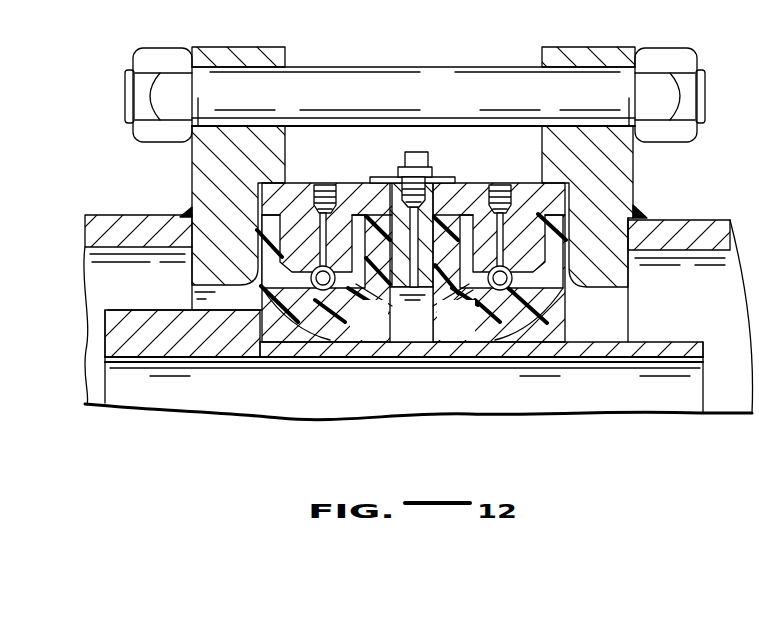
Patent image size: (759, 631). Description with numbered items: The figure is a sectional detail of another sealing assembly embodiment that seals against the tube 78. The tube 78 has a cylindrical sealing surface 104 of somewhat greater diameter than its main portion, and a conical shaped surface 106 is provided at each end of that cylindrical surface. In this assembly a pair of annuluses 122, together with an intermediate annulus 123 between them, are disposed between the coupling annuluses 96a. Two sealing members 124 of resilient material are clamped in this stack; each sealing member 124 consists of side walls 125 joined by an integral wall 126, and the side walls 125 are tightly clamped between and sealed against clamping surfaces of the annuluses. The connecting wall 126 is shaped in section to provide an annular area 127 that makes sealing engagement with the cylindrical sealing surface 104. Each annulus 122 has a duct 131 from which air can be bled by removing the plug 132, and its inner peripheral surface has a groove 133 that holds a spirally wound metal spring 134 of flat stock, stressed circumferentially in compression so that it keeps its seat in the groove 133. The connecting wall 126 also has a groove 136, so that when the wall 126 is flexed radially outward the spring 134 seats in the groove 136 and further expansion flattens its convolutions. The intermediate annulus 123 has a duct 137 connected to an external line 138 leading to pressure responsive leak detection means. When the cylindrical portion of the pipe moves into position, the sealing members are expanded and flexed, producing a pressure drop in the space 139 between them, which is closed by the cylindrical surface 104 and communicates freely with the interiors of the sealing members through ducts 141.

The tube 78 is at (648, 348).
The coupling annuluses 96a is at (212, 160).
The cylindrical sealing surface 104 is at (148, 322).
The conical shaped surface 106 is at (230, 309).
The annulus 122 is at (355, 197).
The intermediate annulus 123 is at (445, 172).
The sealing member 124 is at (282, 345).
The side wall 125 is at (268, 230).
The integral wall 126 is at (282, 322).
The annular area 127 is at (320, 337).
The duct 131 is at (316, 216).
The plug 132 is at (325, 187).
The groove 133 is at (319, 244).
The spirally wound metal spring 134 is at (280, 330).
The groove 136 is at (327, 300).
The duct 137 is at (420, 210).
The external line 138 is at (415, 162).
The space 139 is at (410, 333).
The ducts 141 is at (381, 300).